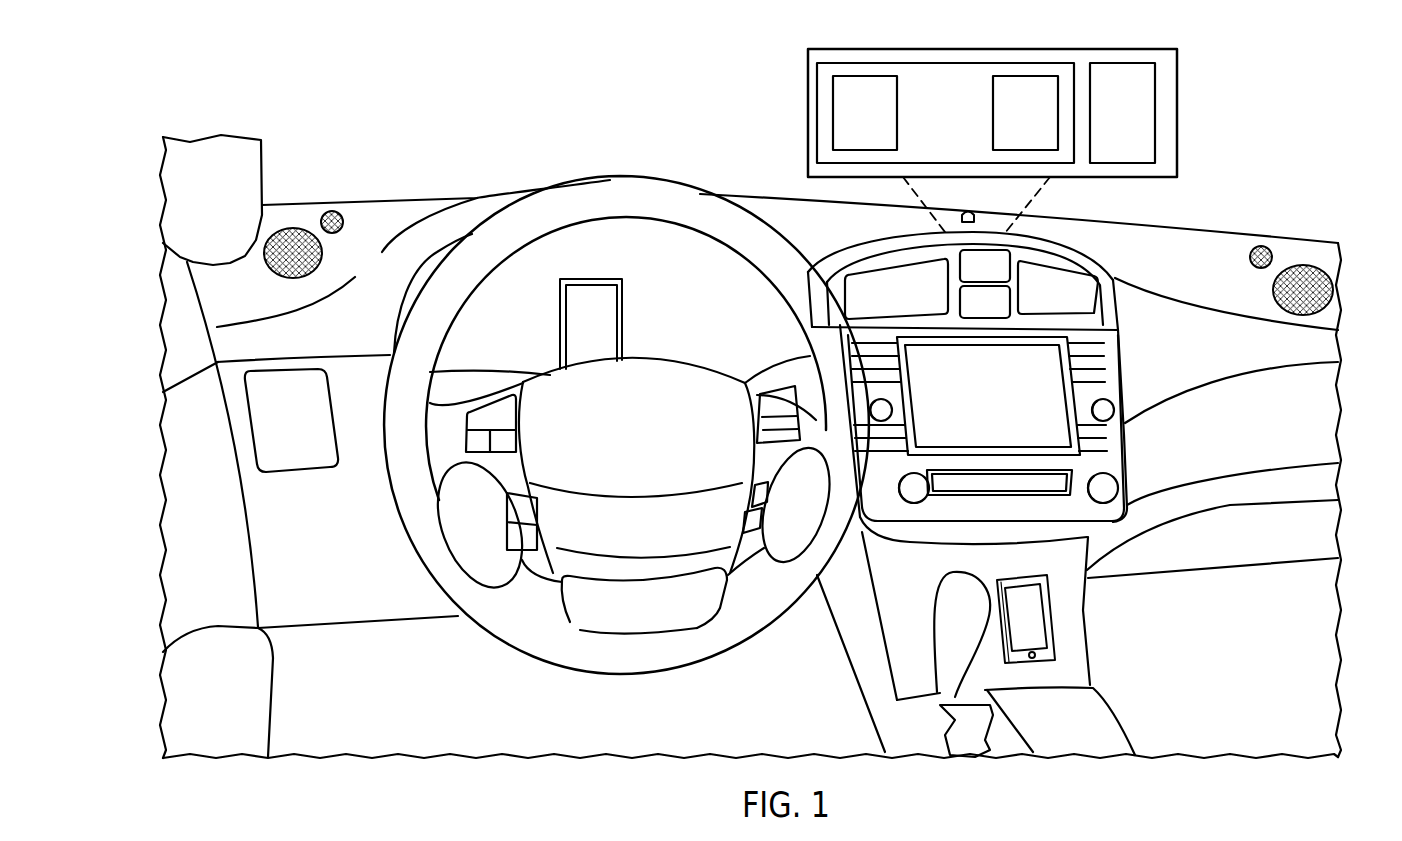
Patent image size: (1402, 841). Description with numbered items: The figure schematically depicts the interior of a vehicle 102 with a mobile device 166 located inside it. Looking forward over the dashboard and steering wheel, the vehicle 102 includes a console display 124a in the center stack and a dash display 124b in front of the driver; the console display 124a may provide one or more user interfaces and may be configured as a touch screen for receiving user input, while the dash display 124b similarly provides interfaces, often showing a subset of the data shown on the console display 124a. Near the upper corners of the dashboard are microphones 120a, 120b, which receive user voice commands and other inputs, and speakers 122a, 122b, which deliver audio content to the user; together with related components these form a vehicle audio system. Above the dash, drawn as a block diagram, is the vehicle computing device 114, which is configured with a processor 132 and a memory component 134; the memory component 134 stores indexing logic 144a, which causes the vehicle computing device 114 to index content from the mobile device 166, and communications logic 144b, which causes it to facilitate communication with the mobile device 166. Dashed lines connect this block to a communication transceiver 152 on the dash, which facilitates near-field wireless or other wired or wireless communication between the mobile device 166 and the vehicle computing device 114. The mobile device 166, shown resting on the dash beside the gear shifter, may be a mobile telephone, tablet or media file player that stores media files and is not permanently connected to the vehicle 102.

The vehicle 102 is at (407, 108).
The vehicle computing device 114 is at (808, 82).
The memory component 134 is at (817, 120).
The indexing logic 144a is at (890, 125).
The communications logic 144b is at (1050, 125).
The processor 132 is at (1142, 125).
The communication transceiver 152 is at (957, 217).
The microphone 120a is at (336, 211).
The microphone 120b is at (1262, 245).
The speaker 122a is at (294, 228).
The speaker 122b is at (1306, 264).
The console display 124a is at (1050, 369).
The dash display 124b is at (622, 299).
The mobile device 166 is at (1053, 635).